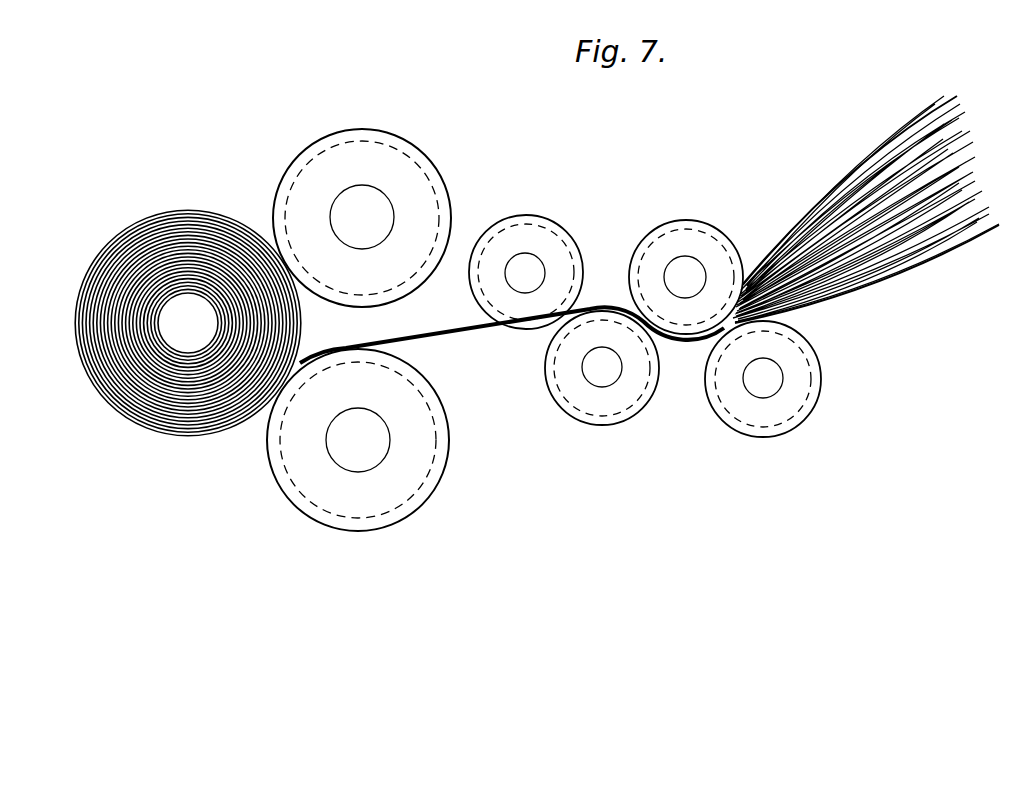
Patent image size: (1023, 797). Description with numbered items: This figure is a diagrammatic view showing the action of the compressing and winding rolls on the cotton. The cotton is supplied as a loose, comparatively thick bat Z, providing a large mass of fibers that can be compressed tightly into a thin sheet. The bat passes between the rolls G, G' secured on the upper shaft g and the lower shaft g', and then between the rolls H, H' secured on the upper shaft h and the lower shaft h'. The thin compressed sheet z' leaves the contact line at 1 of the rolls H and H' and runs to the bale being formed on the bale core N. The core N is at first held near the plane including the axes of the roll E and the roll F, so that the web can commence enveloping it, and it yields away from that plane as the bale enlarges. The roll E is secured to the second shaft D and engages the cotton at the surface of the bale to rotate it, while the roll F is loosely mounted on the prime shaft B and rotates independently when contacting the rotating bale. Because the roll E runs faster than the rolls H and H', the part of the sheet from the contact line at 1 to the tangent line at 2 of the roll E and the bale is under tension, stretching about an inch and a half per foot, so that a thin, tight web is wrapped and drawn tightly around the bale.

The bale core N is at (178, 335).
The roll E is at (348, 137).
The second shaft D is at (358, 229).
The roll F is at (300, 463).
The tangent line of roll E 2 is at (337, 353).
The prime shaft B is at (358, 455).
The paper web z' is at (512, 338).
The contact line of rolls H and H' 1 is at (572, 320).
The roll H is at (526, 257).
The shaft h is at (537, 273).
The roll H' is at (590, 378).
The shaft h' is at (602, 379).
The roll G is at (686, 261).
The shaft g is at (671, 277).
The roll G' is at (745, 382).
The shaft g' is at (760, 415).
The bat Z is at (866, 200).